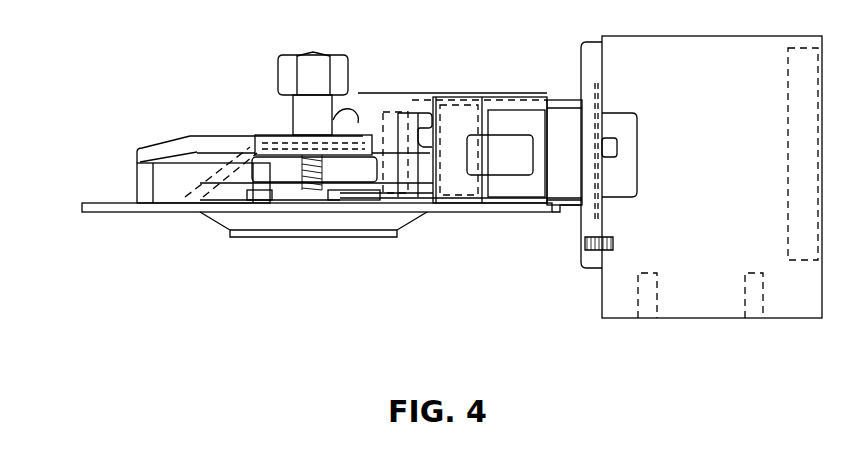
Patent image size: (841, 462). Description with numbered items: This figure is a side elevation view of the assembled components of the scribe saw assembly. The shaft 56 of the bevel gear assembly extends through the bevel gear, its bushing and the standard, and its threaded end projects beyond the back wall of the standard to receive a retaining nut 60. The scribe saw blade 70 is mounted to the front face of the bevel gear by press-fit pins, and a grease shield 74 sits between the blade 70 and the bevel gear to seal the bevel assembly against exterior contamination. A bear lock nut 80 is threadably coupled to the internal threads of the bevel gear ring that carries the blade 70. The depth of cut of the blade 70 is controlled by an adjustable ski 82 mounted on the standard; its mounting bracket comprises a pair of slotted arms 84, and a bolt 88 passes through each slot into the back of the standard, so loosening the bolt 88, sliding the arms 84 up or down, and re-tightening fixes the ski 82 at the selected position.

The retaining nut 60 is at (315, 55).
The shaft 56 is at (335, 120).
The bolt 88 is at (300, 130).
The arm 84 is at (173, 145).
The adjustable ski 82 is at (137, 188).
The scribe saw blade 70 is at (82, 207).
The bear lock nut 80 is at (217, 213).
The grease shield 74 is at (483, 150).